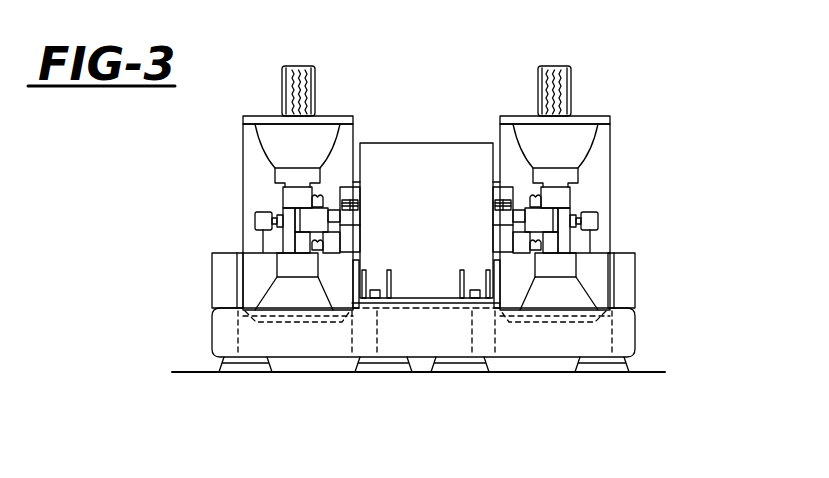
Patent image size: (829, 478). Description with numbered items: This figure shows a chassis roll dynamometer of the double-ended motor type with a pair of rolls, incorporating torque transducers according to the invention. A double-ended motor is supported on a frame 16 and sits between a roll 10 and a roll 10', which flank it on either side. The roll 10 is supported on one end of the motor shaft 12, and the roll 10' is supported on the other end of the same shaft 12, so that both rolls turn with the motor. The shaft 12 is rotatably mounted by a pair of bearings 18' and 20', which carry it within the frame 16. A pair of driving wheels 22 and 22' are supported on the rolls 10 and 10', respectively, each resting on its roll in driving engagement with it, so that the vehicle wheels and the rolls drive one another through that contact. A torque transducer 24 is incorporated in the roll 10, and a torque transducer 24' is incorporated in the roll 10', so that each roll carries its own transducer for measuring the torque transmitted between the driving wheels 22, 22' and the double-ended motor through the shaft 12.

The roll 10 is at (603, 183).
The roll 10' is at (346, 179).
The connecting structure 12 is at (298, 222).
The base 16 is at (198, 338).
The bearing 18' is at (554, 327).
The bearing 20' is at (299, 326).
The driving wheel 22 is at (585, 68).
The driving wheel 22' is at (332, 67).
The torque transducer 24 is at (585, 217).
The torque transducer 24' is at (270, 197).